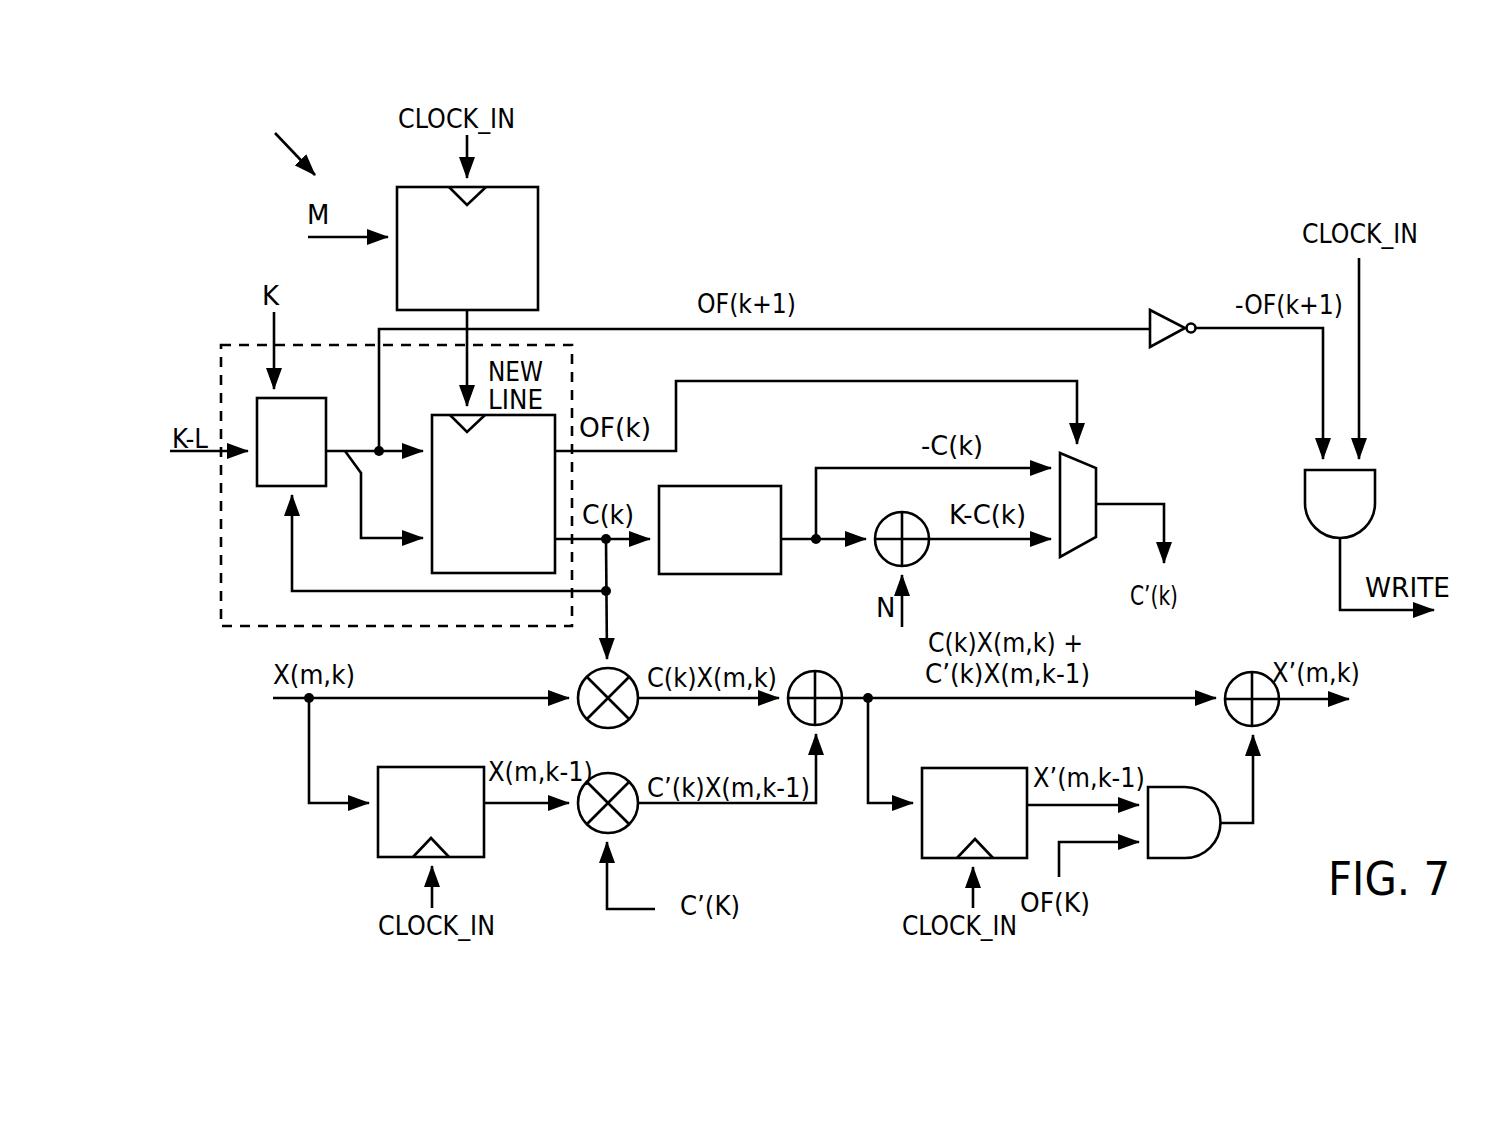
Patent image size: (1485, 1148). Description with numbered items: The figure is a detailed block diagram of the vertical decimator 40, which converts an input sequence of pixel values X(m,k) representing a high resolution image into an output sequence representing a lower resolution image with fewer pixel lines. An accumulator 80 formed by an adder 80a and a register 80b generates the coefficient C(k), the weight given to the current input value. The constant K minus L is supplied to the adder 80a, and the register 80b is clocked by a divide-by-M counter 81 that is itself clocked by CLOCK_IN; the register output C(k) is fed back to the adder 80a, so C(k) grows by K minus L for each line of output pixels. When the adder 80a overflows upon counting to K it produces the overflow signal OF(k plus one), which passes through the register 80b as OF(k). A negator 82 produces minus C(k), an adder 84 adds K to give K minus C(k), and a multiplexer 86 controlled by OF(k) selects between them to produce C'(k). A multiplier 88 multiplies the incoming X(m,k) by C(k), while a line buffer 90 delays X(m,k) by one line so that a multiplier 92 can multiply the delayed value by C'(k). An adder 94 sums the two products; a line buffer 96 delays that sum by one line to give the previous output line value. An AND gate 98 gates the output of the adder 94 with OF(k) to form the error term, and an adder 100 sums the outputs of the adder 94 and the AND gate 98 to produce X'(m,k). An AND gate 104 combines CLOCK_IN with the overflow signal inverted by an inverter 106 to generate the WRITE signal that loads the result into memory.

The vertical decimator 40 is at (280, 142).
The accumulator 80 is at (308, 345).
The adder 80a is at (310, 397).
The register 80b is at (525, 562).
The divide-by-M counter 81 is at (538, 272).
The negator 82 is at (721, 574).
The adder 84 is at (921, 560).
The multiplexer 86 is at (1100, 484).
The multiplier 88 is at (588, 715).
The line buffer 90 is at (413, 767).
The multiplier 92 is at (613, 772).
The adder 94 is at (793, 715).
The line buffer 96 is at (957, 767).
The AND gate 98 is at (1195, 855).
The adder 100 is at (1230, 682).
The AND gate 104 is at (1303, 492).
The inverter 106 is at (1165, 316).